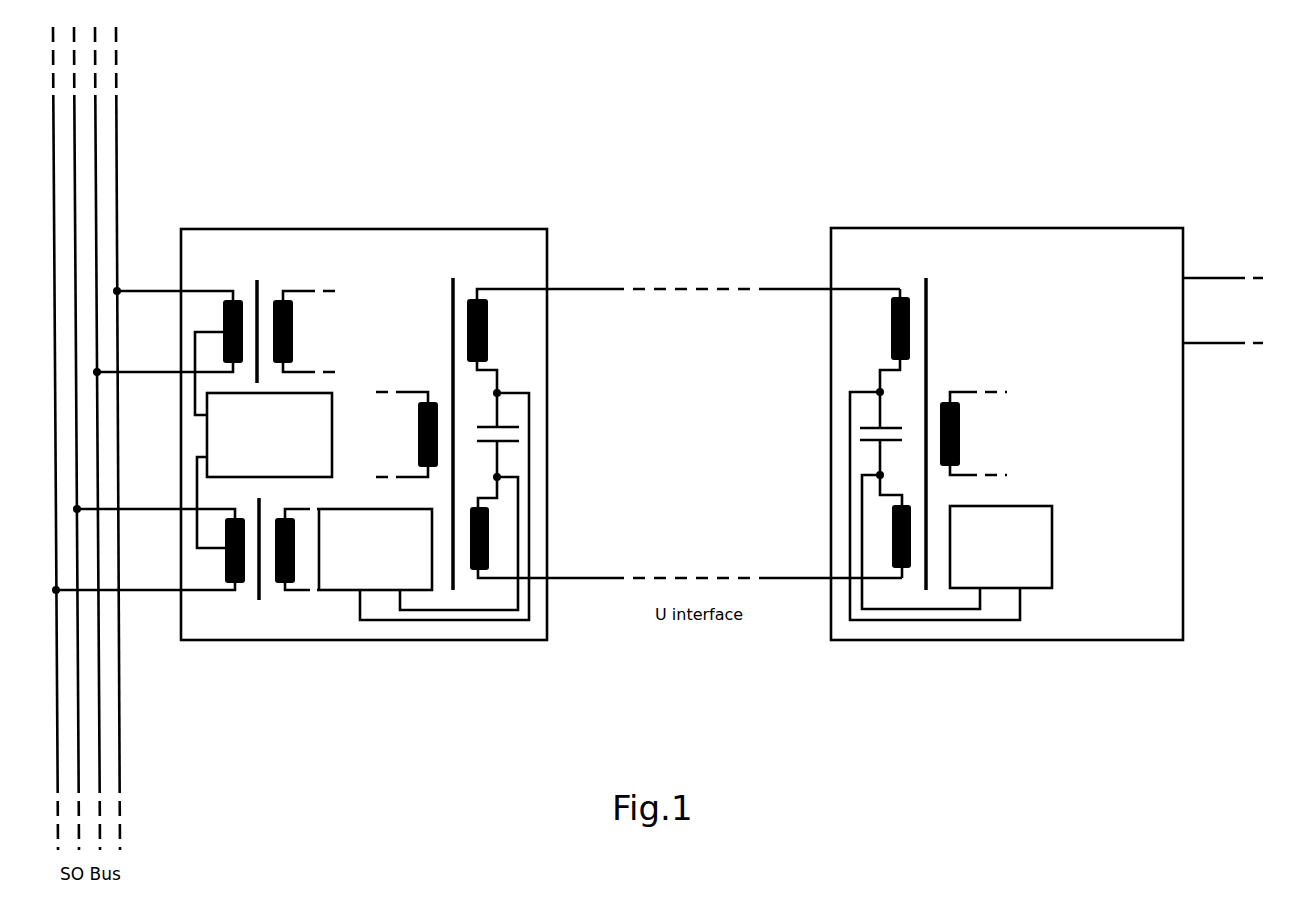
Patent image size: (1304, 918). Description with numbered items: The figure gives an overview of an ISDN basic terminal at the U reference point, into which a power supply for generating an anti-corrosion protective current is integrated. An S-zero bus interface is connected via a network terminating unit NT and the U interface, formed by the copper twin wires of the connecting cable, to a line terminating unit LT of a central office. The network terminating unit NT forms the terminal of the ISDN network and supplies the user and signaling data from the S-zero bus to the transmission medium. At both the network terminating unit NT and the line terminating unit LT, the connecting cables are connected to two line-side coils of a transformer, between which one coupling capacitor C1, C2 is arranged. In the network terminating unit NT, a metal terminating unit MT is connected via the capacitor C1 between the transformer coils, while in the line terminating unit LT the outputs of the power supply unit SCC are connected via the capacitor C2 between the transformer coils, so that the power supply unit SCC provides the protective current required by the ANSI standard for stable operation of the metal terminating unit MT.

The network terminating unit NT is at (265, 247).
The line terminating unit LT is at (1118, 255).
The coupling capacitor C1 is at (517, 433).
The coupling capacitor C2 is at (862, 433).
The metal terminating unit MT is at (337, 578).
The power supply unit SCC is at (1035, 575).